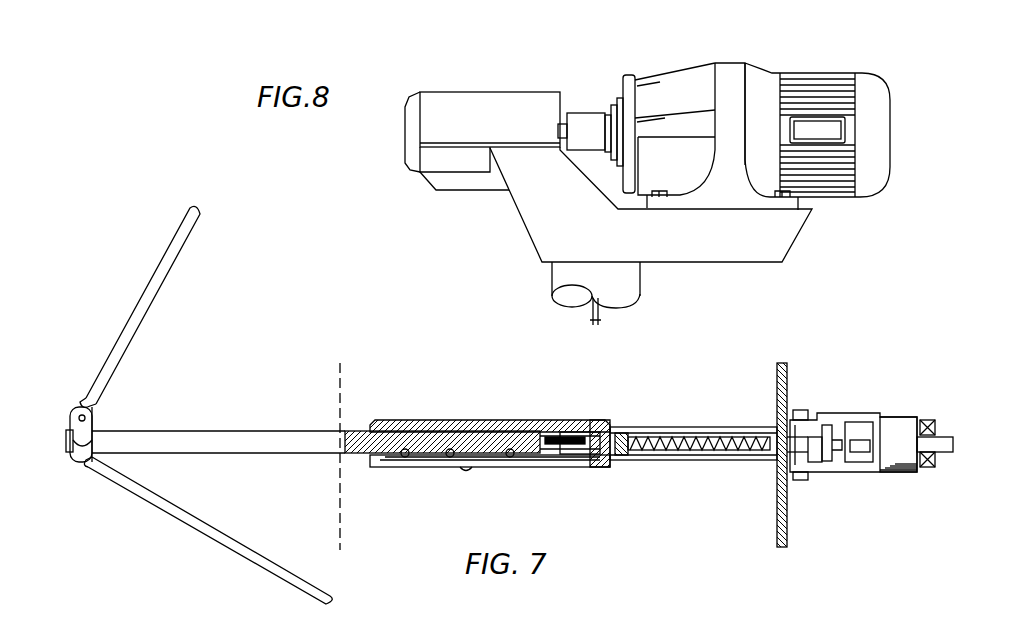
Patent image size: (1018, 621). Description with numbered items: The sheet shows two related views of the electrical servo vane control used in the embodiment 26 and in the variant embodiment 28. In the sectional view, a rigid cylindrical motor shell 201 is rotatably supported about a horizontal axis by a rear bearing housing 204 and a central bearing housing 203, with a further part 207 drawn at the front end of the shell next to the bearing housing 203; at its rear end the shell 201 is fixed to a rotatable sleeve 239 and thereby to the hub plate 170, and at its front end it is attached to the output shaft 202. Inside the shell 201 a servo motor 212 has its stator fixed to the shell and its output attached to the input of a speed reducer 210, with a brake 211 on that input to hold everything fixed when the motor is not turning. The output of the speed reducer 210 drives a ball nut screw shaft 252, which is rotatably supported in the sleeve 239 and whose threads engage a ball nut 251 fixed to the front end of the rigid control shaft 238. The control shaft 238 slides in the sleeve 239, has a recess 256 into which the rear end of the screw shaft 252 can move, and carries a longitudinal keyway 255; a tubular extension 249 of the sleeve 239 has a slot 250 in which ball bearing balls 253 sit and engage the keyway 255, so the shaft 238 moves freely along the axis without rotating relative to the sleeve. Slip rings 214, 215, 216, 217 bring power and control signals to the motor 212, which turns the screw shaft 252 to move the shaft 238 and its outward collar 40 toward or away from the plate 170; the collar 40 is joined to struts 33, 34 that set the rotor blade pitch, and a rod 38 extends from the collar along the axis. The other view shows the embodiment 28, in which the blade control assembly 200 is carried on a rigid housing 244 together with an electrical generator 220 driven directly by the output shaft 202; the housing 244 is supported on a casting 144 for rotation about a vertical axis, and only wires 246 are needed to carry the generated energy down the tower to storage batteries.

In FIG. 8, the embodiment 28 is at (543, 72).
In FIG. 8, the control assembly 200 is at (490, 92).
In FIG. 8, the output shaft 202 is at (573, 115).
In FIG. 7, the output shaft 202 is at (953, 444).
In FIG. 8, the electrical generator 220 is at (769, 73).
In FIG. 8, the housing 244 is at (536, 228).
In FIG. 8, the casting 144 is at (634, 284).
In FIG. 8, the wires 246 is at (602, 310).
In FIG. 7, the strut 34 is at (138, 308).
In FIG. 7, the strut 33 is at (158, 504).
In FIG. 7, the collar 40 is at (92, 430).
In FIG. 7, the push rod 38 is at (288, 430).
In FIG. 7, the tubular extension 249 is at (412, 425).
In FIG. 7, the slot 250 is at (390, 461).
In FIG. 7, the keyway 255 is at (440, 461).
In FIG. 7, the ball bearing balls 253 is at (510, 461).
In FIG. 7, the control shaft 238 is at (496, 437).
In FIG. 7, the recess 256 is at (565, 434).
In FIG. 7, the embodiment 26 is at (592, 413).
In FIG. 7, the sleeve 239 is at (707, 428).
In FIG. 7, the ball nut 251 is at (626, 438).
In FIG. 7, the ball nut screw shaft 252 is at (713, 452).
In FIG. 7, the hub plate 170 is at (787, 537).
In FIG. 7, the motor shell 201 is at (870, 414).
In FIG. 7, the rear bearing housing 204 is at (800, 410).
In FIG. 7, the speed reducer 210 is at (815, 462).
In FIG. 7, the brake 211 is at (830, 458).
In FIG. 7, the servo motor 212 is at (857, 447).
In FIG. 7, the end cap 207 is at (910, 425).
In FIG. 7, the central bearing housing 203 is at (931, 421).
In FIG. 7, the slip ring 214 is at (891, 473).
In FIG. 7, the slip ring 215 is at (895, 473).
In FIG. 7, the slip ring 216 is at (900, 473).
In FIG. 7, the slip ring 217 is at (905, 473).